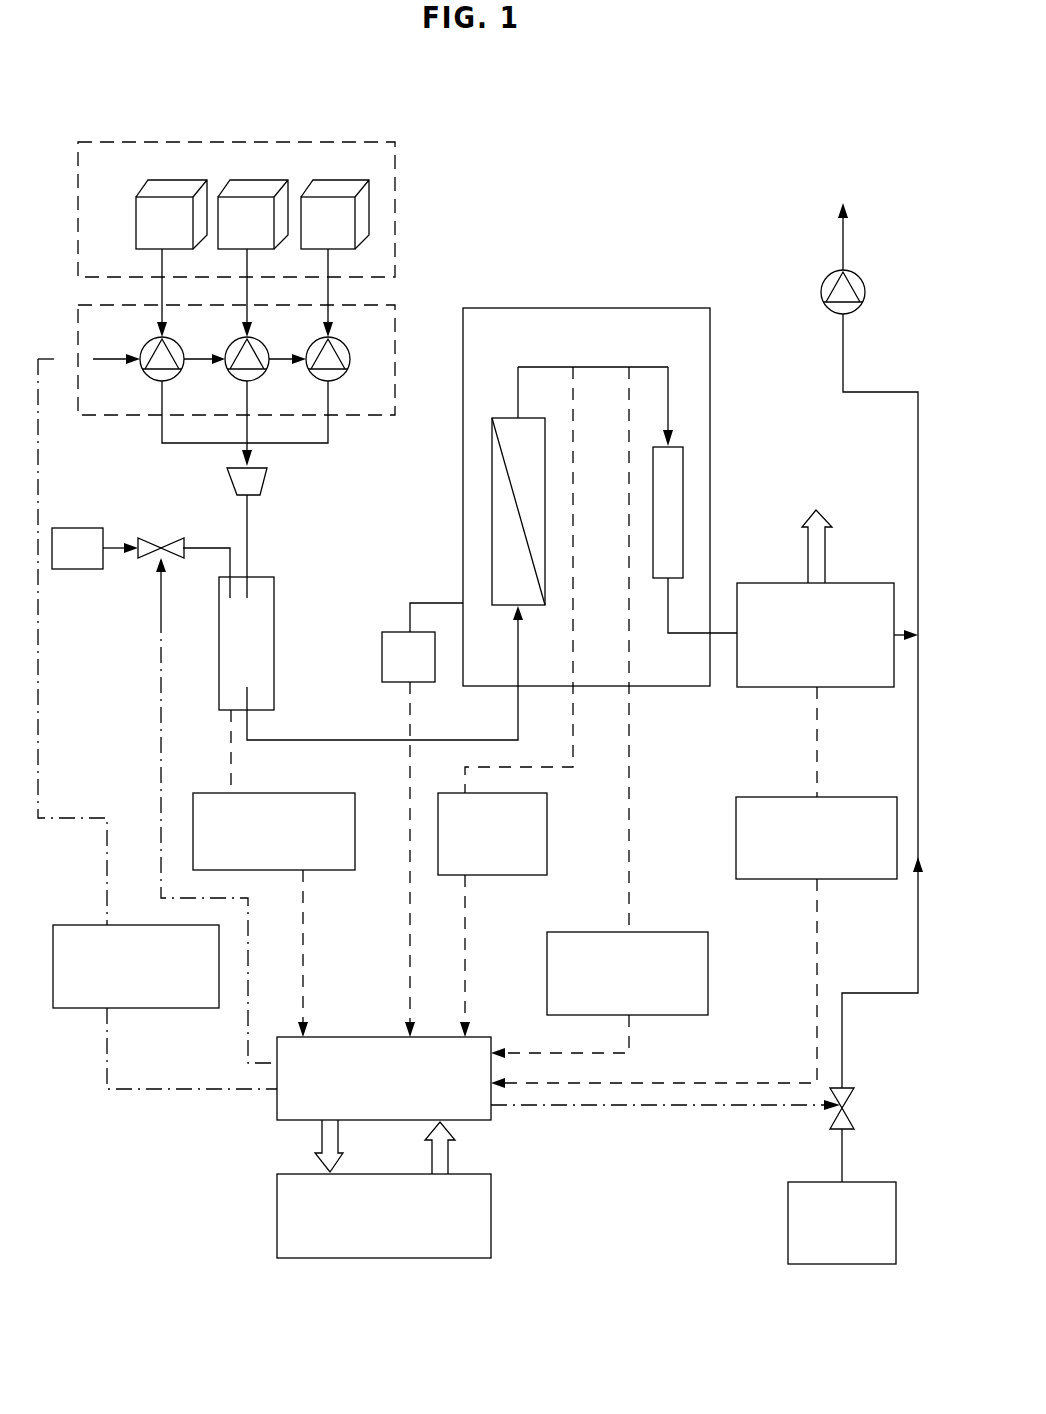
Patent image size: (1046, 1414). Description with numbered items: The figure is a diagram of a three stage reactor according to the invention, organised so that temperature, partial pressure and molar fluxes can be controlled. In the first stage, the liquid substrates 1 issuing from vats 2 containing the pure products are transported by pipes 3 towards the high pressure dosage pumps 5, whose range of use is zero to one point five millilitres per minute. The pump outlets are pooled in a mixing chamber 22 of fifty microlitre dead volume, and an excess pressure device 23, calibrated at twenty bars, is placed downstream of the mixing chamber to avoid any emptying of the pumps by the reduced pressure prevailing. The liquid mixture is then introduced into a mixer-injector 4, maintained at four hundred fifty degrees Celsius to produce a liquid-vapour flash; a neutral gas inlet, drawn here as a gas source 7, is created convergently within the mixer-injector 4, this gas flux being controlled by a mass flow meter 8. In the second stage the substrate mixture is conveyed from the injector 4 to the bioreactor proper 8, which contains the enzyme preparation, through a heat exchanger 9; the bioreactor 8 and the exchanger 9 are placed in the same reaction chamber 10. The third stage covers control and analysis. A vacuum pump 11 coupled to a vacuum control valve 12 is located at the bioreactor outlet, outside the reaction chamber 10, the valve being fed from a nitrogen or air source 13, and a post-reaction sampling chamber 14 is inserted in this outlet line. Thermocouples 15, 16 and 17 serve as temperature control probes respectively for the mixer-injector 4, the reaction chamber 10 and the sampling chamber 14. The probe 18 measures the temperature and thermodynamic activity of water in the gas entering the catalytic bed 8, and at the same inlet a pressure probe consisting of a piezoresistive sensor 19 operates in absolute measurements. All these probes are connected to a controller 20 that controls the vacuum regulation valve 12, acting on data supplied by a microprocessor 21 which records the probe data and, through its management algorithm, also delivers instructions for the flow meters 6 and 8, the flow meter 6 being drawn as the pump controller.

The liquid substrates 1 is at (118, 140).
The vats 2 is at (147, 185).
The pipes 3 is at (172, 445).
The mixer-injector 4 is at (275, 622).
The high pressure dosage pumps 5 is at (75, 320).
The flow meter 6 is at (72, 1008).
The nitrogen source 7 is at (80, 567).
The mass flow meter / bioreactor 8 is at (150, 540).
The heat exchanger 9 is at (500, 417).
The reaction chamber 10 is at (553, 307).
The vacuum pump 11 is at (822, 280).
The vacuum control valve 12 is at (853, 1093).
The nitrogen or air source 13 is at (788, 1238).
The post-reaction sampling chamber 14 is at (760, 582).
The thermocouple 15 is at (320, 870).
The thermocouple 16 is at (380, 663).
The thermocouple 17 is at (736, 848).
The probe 18 is at (708, 965).
The piezoresistive sensor 19 is at (545, 843).
The controller 20 is at (275, 1107).
The microprocessor 21 is at (492, 1222).
The mixing chamber 22 is at (279, 533).
The excess pressure device 23 is at (263, 480).